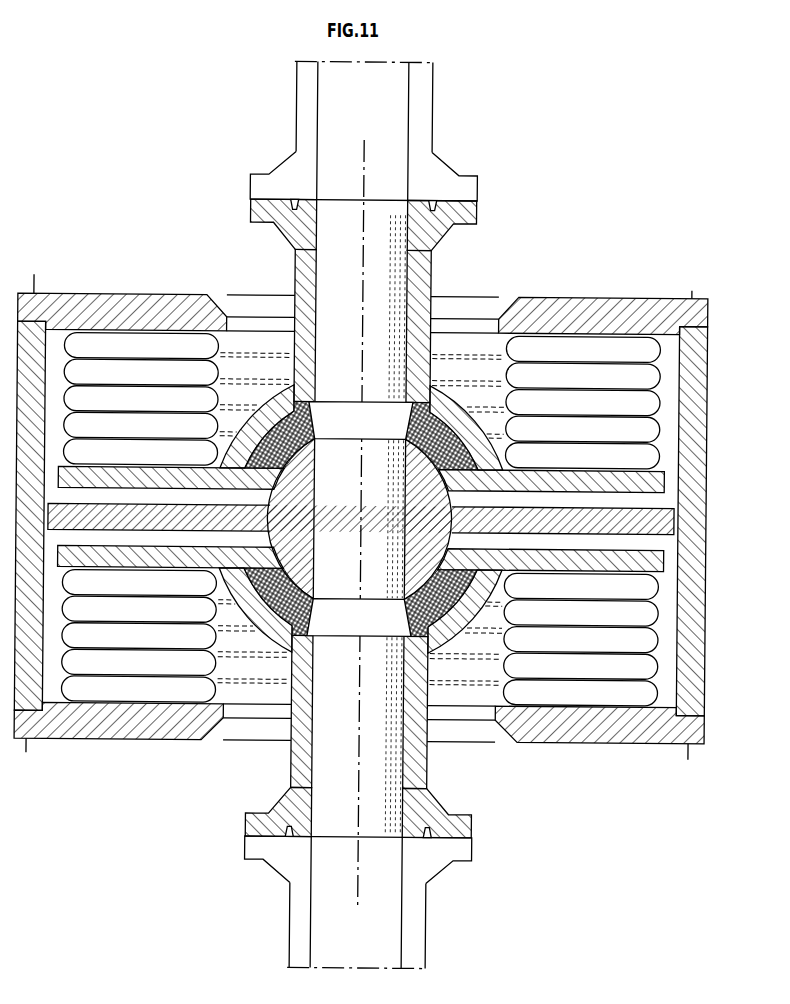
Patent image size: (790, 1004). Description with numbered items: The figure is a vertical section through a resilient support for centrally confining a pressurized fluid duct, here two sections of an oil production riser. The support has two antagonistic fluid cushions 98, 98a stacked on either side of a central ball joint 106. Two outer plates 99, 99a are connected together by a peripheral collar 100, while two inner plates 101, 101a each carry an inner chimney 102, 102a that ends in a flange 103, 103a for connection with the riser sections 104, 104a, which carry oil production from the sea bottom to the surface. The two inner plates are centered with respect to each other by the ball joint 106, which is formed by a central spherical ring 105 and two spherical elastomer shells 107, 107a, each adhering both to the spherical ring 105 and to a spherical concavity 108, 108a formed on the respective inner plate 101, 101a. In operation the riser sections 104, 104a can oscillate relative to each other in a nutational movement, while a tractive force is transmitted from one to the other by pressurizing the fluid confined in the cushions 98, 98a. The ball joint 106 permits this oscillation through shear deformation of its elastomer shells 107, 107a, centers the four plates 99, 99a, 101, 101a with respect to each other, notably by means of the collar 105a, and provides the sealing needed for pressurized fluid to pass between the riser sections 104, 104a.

The fluid cushion 98 is at (118, 347).
The fluid cushion 98a is at (107, 667).
The outer plate 99 is at (162, 307).
The outer plate 99a is at (153, 723).
The peripheral collar 100 is at (689, 592).
The inner plate 101 is at (651, 481).
The inner plate 101a is at (651, 560).
The inner chimney 102 is at (296, 262).
The inner chimney 102a is at (298, 778).
The flange 103 is at (262, 220).
The flange 103a is at (247, 825).
The riser section 104 is at (265, 182).
The riser section 104a is at (247, 850).
The central spherical ring 105 is at (412, 538).
The collar 105a is at (661, 518).
The ball joint 106 is at (457, 402).
The spherical elastomer shell 107 is at (305, 423).
The spherical elastomer shell 107a is at (318, 625).
The spherical concavity 108 is at (468, 447).
The spherical concavity 108a is at (481, 604).